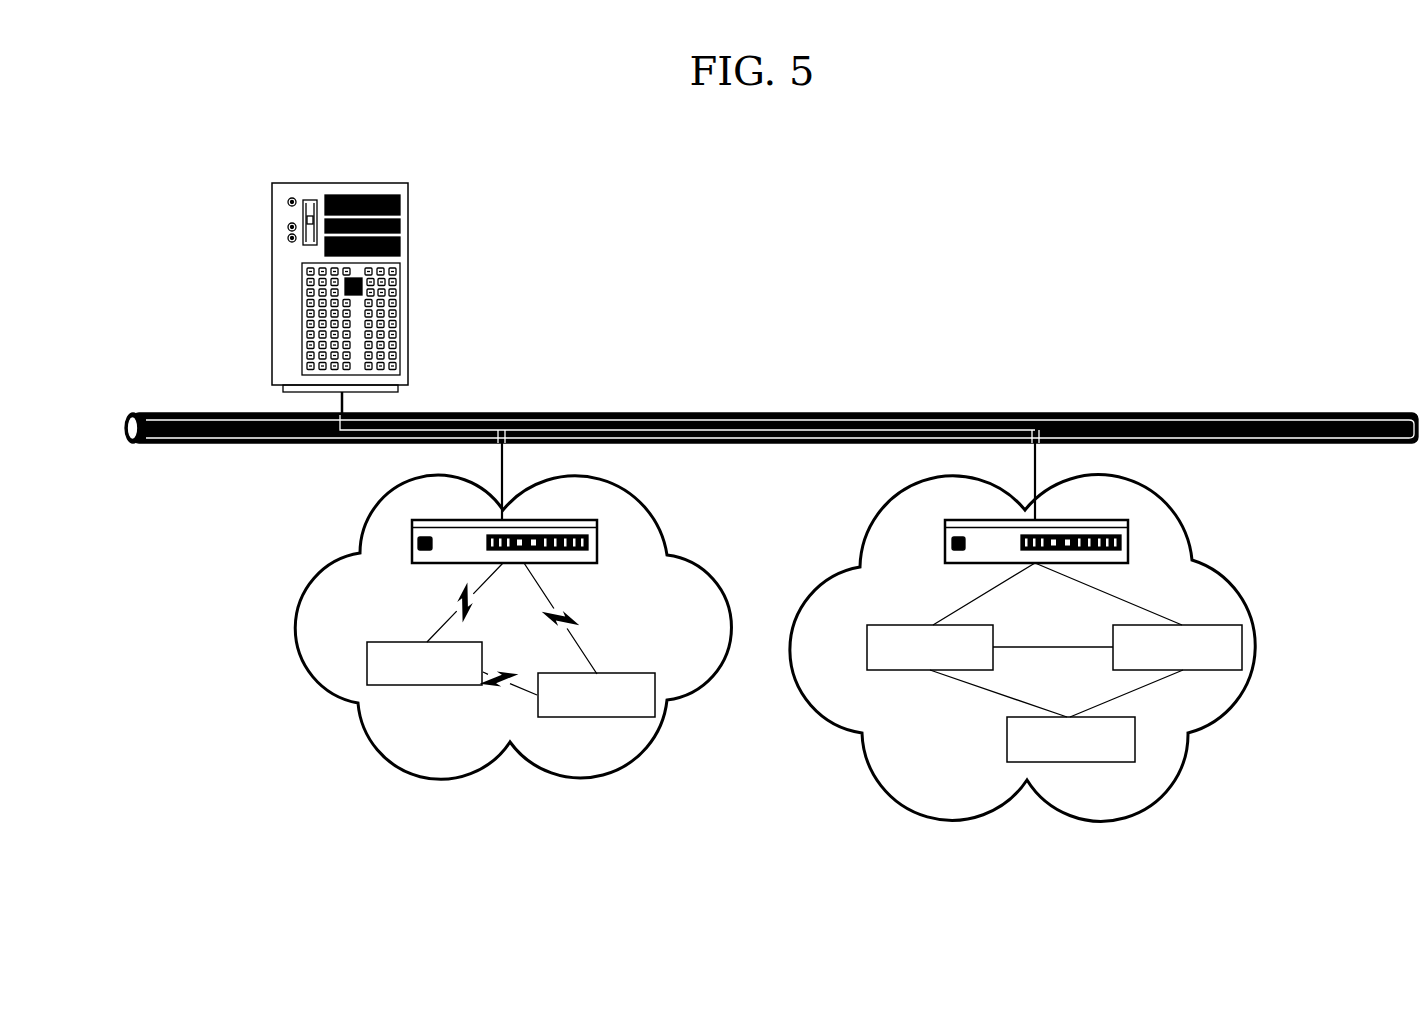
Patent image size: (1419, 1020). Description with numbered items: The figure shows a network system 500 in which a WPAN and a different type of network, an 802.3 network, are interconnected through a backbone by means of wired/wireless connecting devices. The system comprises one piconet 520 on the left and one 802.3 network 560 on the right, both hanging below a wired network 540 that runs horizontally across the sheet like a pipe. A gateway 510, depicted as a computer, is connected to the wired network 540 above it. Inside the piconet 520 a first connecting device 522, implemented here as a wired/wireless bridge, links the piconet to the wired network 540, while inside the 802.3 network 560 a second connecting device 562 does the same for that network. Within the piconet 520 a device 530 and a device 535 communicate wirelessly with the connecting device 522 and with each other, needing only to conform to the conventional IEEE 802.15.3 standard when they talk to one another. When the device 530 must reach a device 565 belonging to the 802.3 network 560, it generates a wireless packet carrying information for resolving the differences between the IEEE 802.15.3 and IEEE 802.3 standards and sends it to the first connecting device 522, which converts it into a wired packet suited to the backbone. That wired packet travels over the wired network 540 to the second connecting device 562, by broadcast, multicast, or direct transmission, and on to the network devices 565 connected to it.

The network system 500 is at (150, 202).
The gateway 510 is at (337, 183).
The piconet 520 is at (647, 512).
The first connecting device 522 is at (590, 541).
The device 530 is at (367, 654).
The device 535 is at (606, 673).
The wired network 540 is at (604, 413).
The 802.3 network 560 is at (1178, 530).
The second connecting device 562 is at (1128, 541).
The device 565 is at (867, 645).